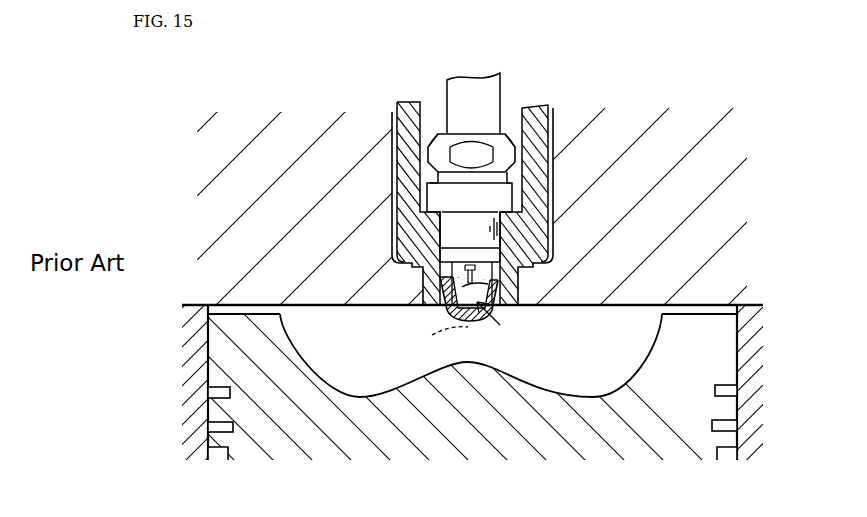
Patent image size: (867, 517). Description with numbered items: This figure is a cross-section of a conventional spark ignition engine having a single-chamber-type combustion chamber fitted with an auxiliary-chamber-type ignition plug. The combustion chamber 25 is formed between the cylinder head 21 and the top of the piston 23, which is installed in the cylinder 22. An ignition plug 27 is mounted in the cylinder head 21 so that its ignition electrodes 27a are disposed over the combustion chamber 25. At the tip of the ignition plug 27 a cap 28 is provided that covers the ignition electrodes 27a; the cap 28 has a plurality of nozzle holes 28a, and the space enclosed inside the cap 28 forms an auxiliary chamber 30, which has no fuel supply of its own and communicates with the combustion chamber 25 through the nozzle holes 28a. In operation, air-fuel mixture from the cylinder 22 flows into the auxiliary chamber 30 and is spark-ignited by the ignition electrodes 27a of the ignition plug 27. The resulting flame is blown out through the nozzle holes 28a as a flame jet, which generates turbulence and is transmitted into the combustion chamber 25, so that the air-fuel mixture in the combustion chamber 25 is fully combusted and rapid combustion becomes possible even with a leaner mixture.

The cylinder head 21 is at (653, 124).
The cylinder 22 is at (760, 350).
The piston 23 is at (233, 308).
The combustion chamber 25 is at (320, 350).
The ignition plug 27 is at (502, 92).
The ignition electrodes 27a is at (500, 291).
The cap 28 is at (437, 309).
The nozzle holes 28a is at (433, 334).
The auxiliary chamber 30 is at (500, 325).